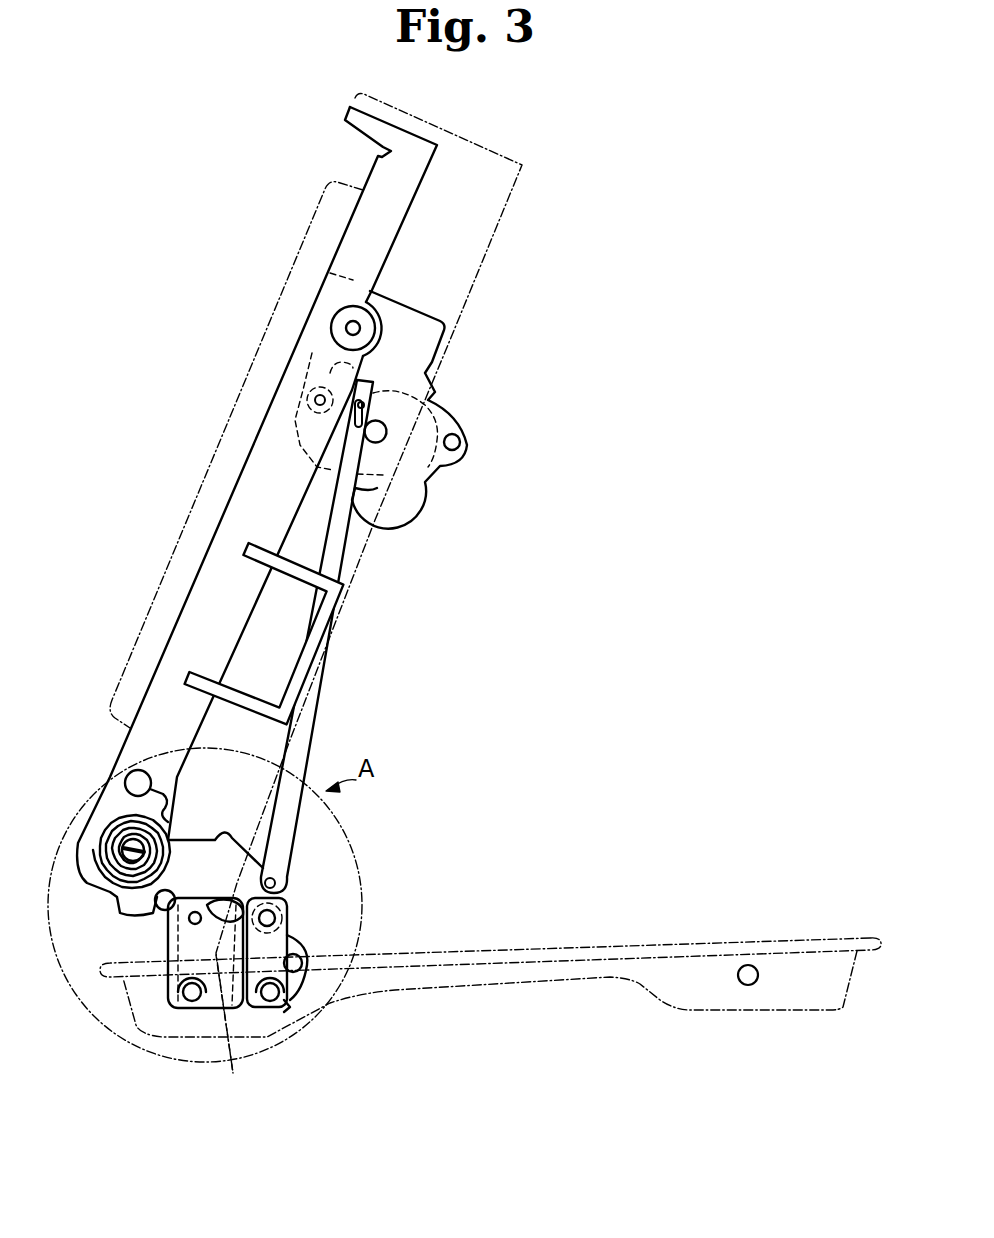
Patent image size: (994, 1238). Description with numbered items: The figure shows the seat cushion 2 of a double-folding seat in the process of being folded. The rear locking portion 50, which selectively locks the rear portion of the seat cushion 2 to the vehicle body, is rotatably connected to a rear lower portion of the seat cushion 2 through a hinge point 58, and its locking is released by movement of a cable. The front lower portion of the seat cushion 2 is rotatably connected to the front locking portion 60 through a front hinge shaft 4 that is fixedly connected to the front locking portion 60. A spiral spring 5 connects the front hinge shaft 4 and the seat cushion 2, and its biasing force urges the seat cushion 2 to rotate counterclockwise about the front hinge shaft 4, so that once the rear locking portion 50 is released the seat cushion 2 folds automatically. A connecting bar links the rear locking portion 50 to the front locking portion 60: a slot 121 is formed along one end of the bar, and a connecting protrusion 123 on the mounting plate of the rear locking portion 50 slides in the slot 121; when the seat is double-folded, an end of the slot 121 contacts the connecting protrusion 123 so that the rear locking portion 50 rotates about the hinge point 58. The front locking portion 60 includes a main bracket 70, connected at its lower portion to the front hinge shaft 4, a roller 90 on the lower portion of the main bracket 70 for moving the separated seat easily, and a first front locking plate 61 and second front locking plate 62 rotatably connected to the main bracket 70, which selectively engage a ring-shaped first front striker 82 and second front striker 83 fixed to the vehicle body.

The seat cushion 2 is at (188, 597).
The front hinge shaft 4 is at (113, 823).
The spiral spring 5 is at (113, 883).
The rear locking portion 50 is at (449, 498).
The hinge point 58 is at (353, 328).
The front locking portion 60 is at (310, 931).
The first front locking plate 61 is at (235, 1029).
The second front locking plate 62 is at (272, 1007).
The main bracket 70 is at (168, 947).
The first front striker 82 is at (183, 1003).
The second front striker 83 is at (268, 1010).
The roller 90 is at (308, 963).
The slot 121 is at (345, 426).
The connecting protrusion 123 is at (350, 388).